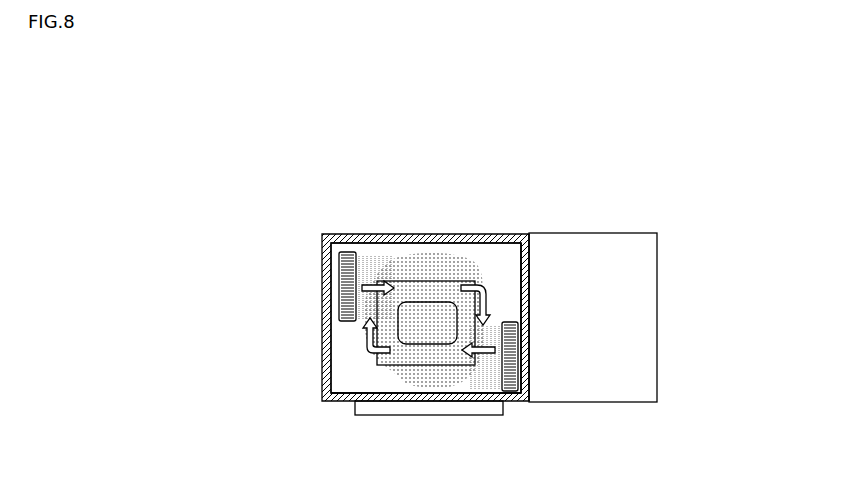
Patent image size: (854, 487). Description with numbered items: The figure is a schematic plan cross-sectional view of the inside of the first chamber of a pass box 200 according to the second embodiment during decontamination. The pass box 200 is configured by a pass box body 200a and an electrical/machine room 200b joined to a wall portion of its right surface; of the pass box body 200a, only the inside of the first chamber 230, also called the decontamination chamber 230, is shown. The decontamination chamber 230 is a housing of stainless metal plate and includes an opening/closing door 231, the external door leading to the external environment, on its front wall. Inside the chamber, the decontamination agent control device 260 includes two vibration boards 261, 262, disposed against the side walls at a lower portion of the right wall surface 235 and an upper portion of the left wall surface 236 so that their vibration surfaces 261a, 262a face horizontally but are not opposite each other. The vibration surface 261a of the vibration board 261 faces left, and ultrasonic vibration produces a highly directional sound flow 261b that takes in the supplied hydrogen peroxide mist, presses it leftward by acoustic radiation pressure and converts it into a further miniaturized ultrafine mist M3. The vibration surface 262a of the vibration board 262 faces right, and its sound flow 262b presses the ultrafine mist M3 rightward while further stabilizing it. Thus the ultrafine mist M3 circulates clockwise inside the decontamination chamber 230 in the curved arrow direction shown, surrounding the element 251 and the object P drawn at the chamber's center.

The pass box 200 is at (432, 190).
The pass box body 200a is at (343, 233).
The electrical/machine room 200b is at (600, 233).
The first chamber 230 is at (312, 343).
The opening/closing door 231 is at (455, 417).
The right wall surface 235 is at (533, 258).
The left wall surface 236 is at (340, 385).
The stage plate 251 is at (410, 365).
The workpiece P is at (430, 325).
The ultrafine mist M3 is at (436, 270).
The decontamination agent control device 260 is at (434, 324).
The vibration board 261 is at (532, 362).
The vibration surface 261a is at (532, 327).
The sound flow 261b is at (532, 377).
The vibration board 262 is at (340, 287).
The vibration surface 262a is at (340, 258).
The sound flow 262b is at (340, 305).